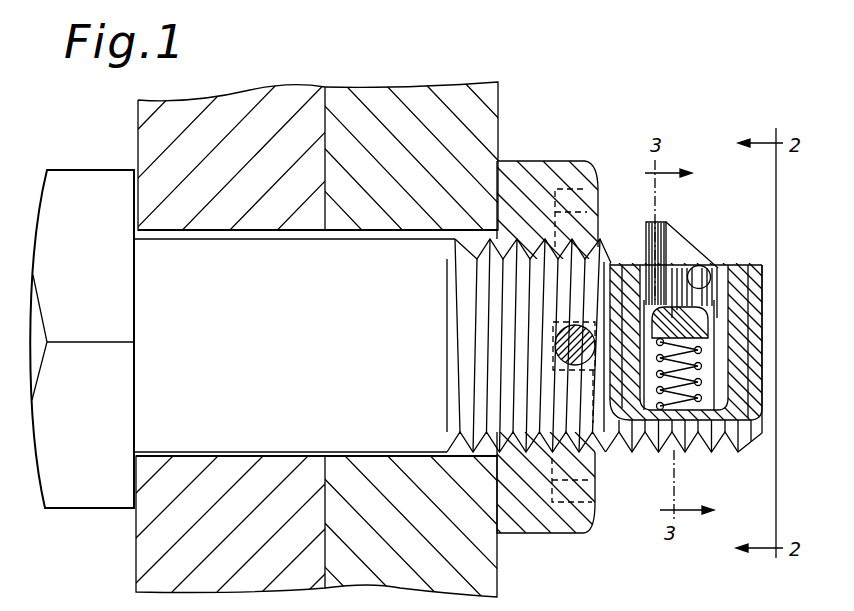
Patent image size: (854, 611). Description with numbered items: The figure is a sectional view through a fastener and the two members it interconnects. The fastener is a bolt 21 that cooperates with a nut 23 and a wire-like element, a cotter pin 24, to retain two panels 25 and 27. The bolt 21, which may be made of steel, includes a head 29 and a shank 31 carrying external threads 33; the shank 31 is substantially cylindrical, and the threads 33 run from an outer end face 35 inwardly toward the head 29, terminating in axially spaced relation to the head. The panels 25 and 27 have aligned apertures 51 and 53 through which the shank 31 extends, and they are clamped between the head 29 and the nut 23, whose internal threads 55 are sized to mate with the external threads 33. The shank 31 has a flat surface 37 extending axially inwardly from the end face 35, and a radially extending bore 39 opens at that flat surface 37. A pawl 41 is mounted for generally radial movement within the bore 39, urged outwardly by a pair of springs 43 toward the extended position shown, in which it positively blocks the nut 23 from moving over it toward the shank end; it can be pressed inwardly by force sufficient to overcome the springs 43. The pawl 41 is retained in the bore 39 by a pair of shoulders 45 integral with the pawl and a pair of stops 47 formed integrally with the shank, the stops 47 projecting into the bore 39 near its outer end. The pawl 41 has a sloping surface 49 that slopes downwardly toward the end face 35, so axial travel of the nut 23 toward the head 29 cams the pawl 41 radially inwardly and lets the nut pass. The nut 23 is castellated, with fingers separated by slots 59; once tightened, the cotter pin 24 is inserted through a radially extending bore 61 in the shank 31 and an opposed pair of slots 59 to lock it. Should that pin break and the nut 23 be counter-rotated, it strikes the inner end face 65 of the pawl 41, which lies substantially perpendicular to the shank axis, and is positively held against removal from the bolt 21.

The bolt 21 is at (86, 158).
The nut 23 is at (538, 156).
The cotter pin 24 is at (546, 340).
The panel 25 is at (283, 107).
The panel 27 is at (418, 105).
The head 29 is at (96, 490).
The shank 31 is at (182, 398).
The external threads 33 is at (465, 394).
The outer end face 35 is at (770, 312).
The flat surface 37 is at (758, 268).
The bore 39 is at (697, 452).
The pawl 41 is at (700, 245).
The springs 43 is at (640, 428).
The shoulders 45 is at (698, 265).
The stops 47 is at (645, 266).
The sloping surface 49 is at (688, 226).
The aperture 51 is at (264, 231).
The aperture 53 is at (393, 231).
The internal threads 55 is at (510, 433).
The slots 59 is at (590, 207).
The bore 61 is at (556, 350).
The inner end face 65 is at (647, 222).